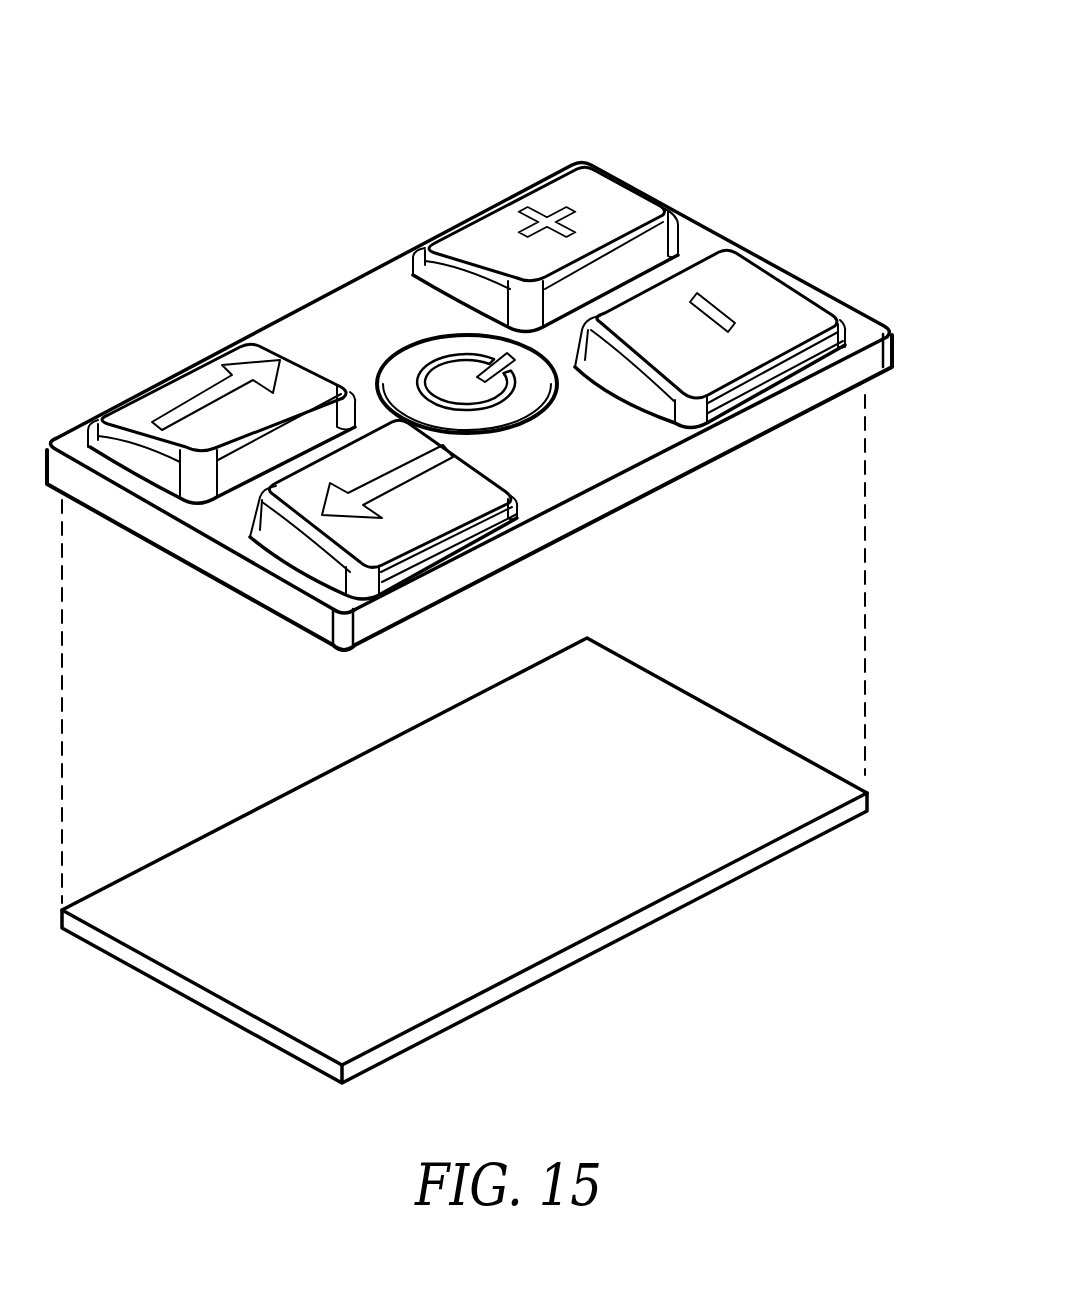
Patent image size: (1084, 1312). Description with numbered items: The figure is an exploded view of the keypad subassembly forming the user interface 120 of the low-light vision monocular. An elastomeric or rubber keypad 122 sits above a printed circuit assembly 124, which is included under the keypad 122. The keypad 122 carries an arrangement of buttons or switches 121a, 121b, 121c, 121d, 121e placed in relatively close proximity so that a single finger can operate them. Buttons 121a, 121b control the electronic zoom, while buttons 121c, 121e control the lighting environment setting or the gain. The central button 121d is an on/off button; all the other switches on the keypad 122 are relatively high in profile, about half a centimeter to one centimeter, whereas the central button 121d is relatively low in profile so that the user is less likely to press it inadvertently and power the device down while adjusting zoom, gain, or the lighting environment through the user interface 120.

The user interface 120 is at (665, 132).
The button 121a is at (215, 415).
The button 121b is at (462, 492).
The button 121c is at (753, 312).
The central button 121d is at (425, 357).
The button 121e is at (566, 187).
The keypad 122 is at (705, 247).
The printed circuit assembly 124 is at (668, 745).